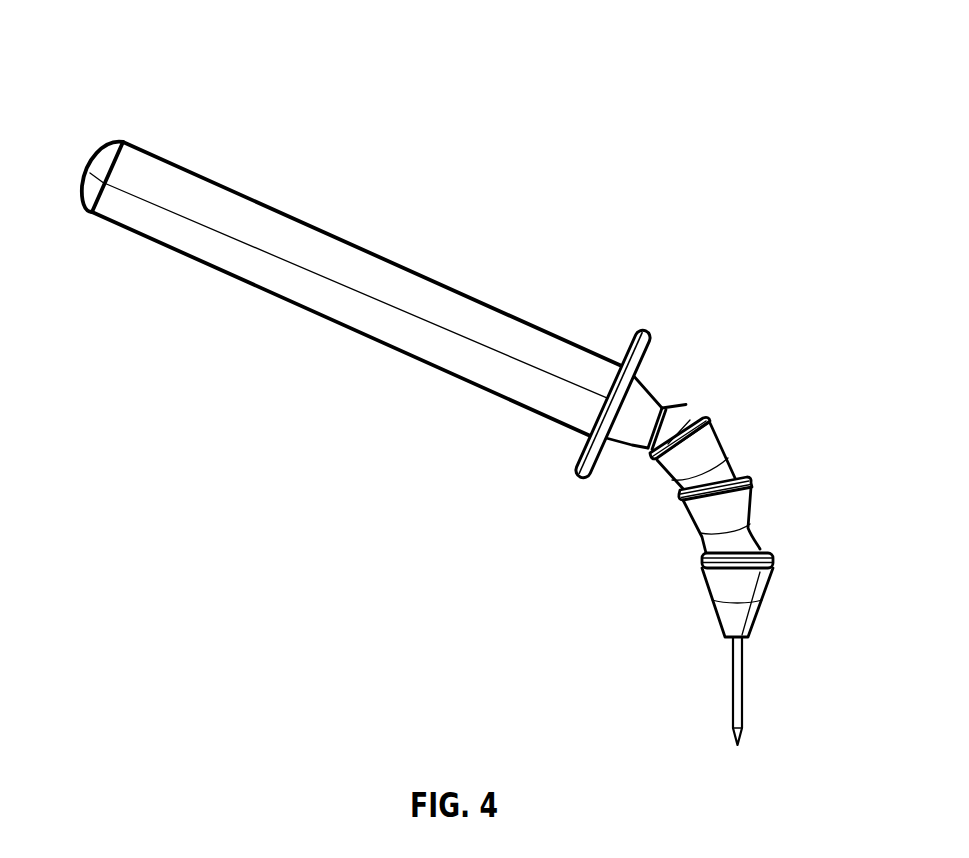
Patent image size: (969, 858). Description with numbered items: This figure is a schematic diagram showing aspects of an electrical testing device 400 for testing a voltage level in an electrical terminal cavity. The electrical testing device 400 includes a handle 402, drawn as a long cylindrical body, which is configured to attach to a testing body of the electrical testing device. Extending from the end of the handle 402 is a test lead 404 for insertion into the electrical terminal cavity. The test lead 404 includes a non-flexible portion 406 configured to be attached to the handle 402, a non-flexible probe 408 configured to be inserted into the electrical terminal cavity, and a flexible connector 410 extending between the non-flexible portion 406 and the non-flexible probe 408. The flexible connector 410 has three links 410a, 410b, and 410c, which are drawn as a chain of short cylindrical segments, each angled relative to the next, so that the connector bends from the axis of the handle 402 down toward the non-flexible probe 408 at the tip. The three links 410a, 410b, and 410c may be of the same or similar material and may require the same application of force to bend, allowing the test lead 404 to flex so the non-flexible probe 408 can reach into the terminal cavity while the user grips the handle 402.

The electrical testing device 400 is at (144, 64).
The handle 402 is at (352, 310).
The test lead 404 is at (648, 298).
The non-flexible portion 406 is at (647, 360).
The non-flexible probe 408 is at (737, 687).
The flexible connector 410 is at (780, 350).
The first link 410a is at (708, 440).
The second link 410b is at (727, 517).
The third link 410c is at (747, 590).